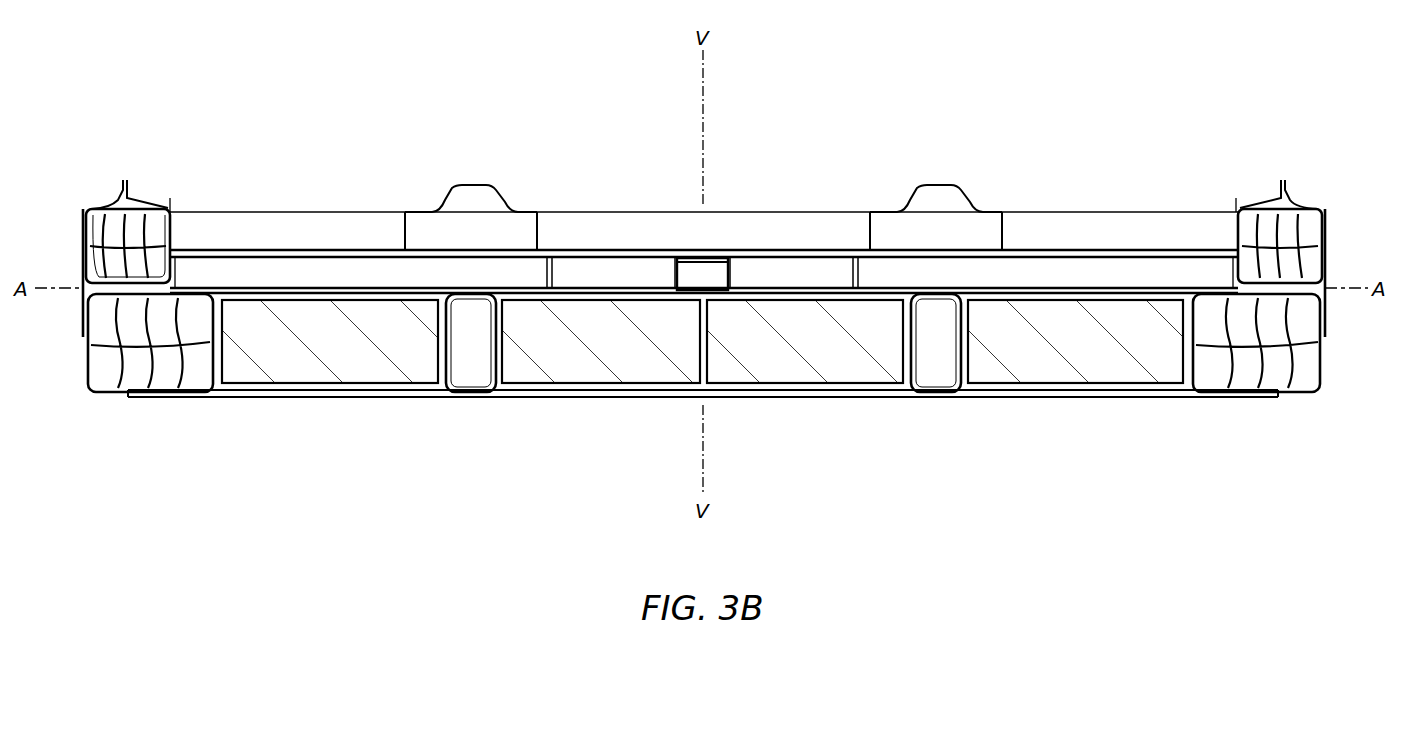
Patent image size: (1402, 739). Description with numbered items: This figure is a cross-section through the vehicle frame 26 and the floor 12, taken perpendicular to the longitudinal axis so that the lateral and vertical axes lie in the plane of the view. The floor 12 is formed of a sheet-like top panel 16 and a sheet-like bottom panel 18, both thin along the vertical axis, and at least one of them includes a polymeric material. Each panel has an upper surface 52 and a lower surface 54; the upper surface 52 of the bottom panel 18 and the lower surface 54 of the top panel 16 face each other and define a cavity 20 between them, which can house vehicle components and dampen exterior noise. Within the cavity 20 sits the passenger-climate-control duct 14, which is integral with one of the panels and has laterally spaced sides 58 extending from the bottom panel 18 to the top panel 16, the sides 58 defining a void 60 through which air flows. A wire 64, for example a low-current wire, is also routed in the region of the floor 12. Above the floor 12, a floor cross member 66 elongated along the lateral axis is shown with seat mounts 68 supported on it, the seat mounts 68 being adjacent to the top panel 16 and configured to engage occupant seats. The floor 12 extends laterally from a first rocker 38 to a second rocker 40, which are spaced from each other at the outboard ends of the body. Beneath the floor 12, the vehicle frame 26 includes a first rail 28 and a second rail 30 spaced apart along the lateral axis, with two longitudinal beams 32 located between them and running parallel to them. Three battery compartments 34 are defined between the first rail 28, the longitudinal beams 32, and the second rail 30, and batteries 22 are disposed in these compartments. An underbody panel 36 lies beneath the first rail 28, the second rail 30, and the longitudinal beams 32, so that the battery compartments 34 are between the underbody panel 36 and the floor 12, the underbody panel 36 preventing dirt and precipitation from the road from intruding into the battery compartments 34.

The floor 12 is at (245, 252).
The passenger-climate-control duct 14 is at (542, 268).
The top panel 16 is at (1038, 252).
The bottom panel 18 is at (1050, 300).
The cavity 20 is at (362, 273).
The batteries 22 is at (414, 386).
The vehicle frame 26 is at (65, 195).
The first rail 28 is at (88, 352).
The second rail 30 is at (1320, 352).
The longitudinal beam 32 is at (490, 340).
The battery compartment 34 is at (279, 388).
The underbody panel 36 is at (172, 398).
The first rocker 38 is at (86, 250).
The second rocker 40 is at (1323, 250).
The upper surface 52 is at (330, 290).
The lower surface 54 is at (1108, 268).
The sides 58 is at (552, 270).
The void 60 is at (703, 274).
The wire 64 is at (708, 257).
The floor cross member 66 is at (680, 212).
The seat mounts 68 is at (473, 185).